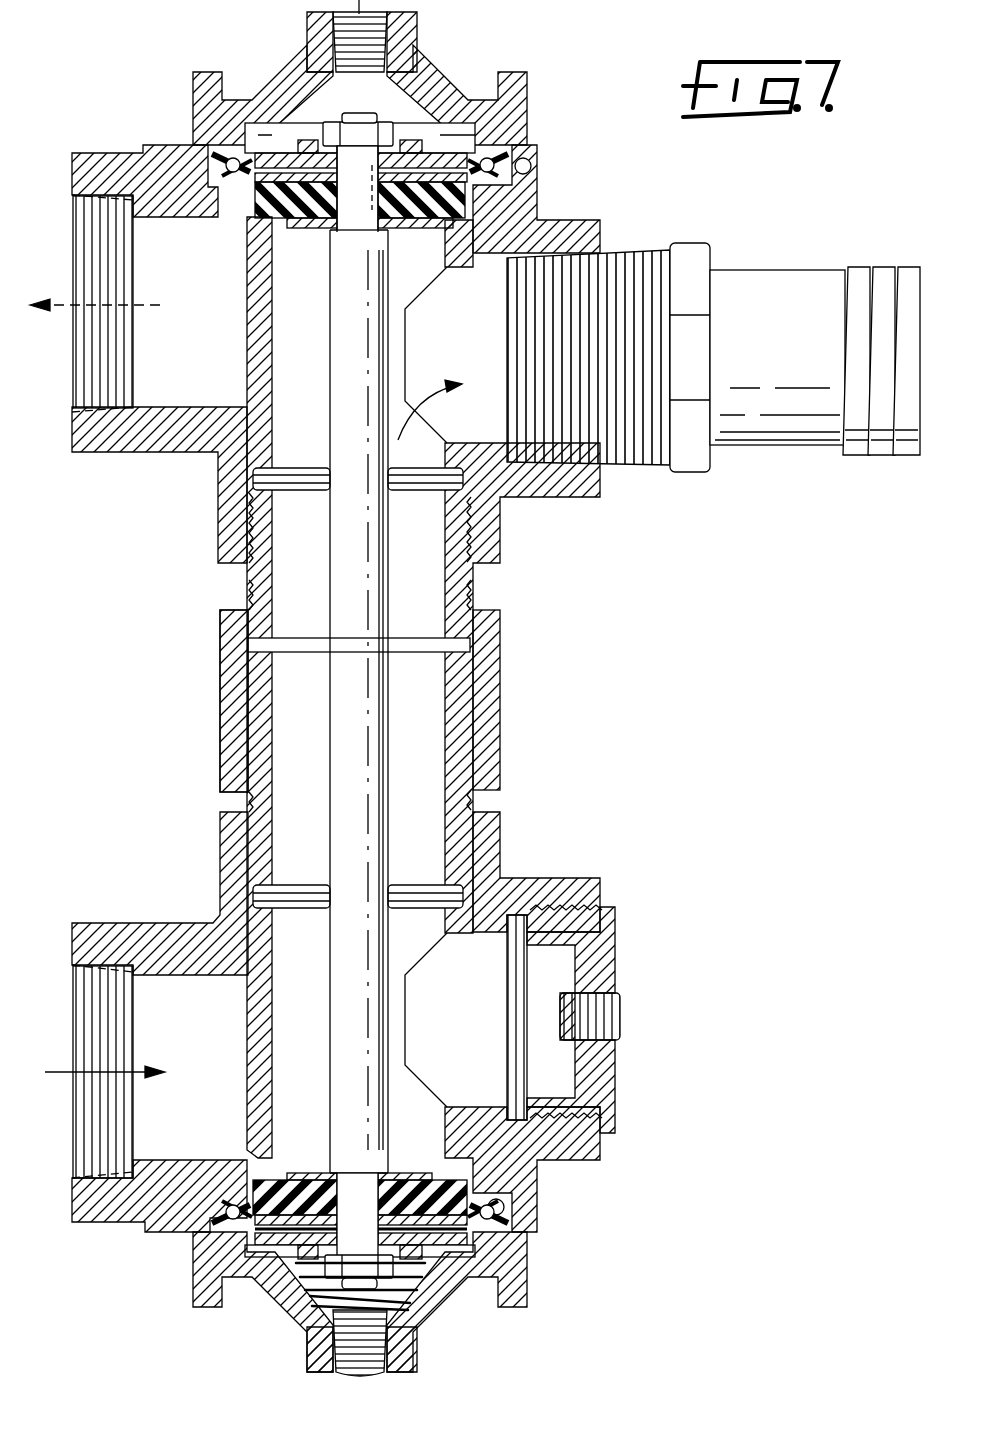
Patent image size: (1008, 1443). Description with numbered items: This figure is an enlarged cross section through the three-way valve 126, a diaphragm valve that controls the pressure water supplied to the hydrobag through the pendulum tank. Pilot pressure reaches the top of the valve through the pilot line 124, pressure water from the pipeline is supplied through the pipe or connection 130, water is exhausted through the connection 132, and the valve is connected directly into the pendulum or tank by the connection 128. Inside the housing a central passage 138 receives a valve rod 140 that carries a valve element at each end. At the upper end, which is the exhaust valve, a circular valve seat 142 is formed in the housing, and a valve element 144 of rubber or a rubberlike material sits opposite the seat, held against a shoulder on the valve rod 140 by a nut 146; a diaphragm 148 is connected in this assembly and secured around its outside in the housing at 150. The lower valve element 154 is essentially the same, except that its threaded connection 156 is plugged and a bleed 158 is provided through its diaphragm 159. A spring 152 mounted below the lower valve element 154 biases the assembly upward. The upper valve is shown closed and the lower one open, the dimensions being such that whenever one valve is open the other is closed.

The pilot line 124 is at (358, 46).
The three-way valve 126 is at (217, 706).
The connection 128 is at (782, 430).
The pipe or connection 130 is at (95, 1083).
The connection 132 is at (95, 318).
The central passage 138 is at (452, 762).
The valve rod 140 is at (378, 737).
The valve seat 142 is at (262, 218).
The valve element 144 is at (315, 214).
The nut 146 is at (392, 138).
The diaphragm 148 is at (232, 160).
The diaphragm securing means 150 is at (507, 166).
The spring 152 is at (308, 1292).
The lower valve element 154 is at (478, 1249).
The threaded connection 156 is at (385, 1342).
The bleed 158 is at (232, 1222).
The diaphragm 159 is at (480, 1222).